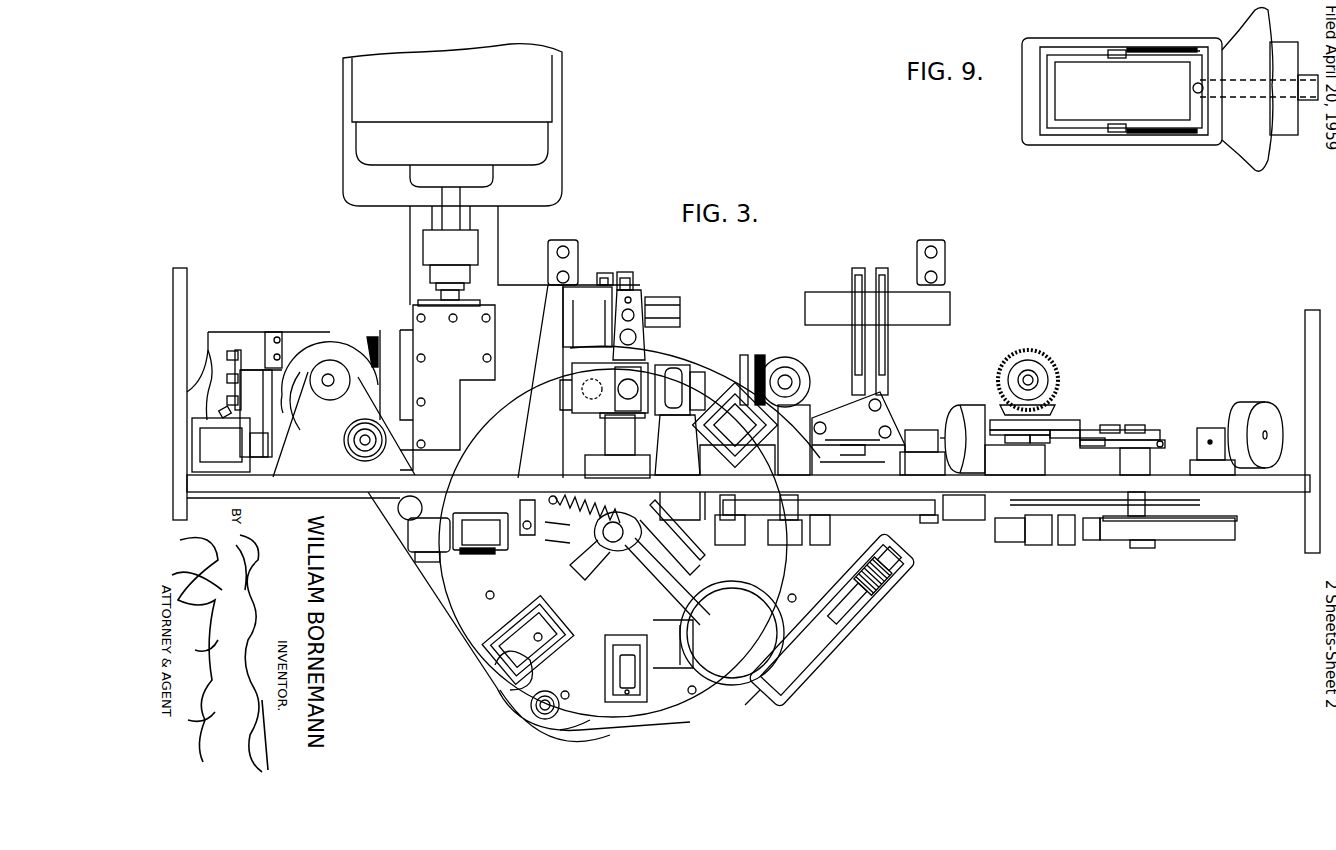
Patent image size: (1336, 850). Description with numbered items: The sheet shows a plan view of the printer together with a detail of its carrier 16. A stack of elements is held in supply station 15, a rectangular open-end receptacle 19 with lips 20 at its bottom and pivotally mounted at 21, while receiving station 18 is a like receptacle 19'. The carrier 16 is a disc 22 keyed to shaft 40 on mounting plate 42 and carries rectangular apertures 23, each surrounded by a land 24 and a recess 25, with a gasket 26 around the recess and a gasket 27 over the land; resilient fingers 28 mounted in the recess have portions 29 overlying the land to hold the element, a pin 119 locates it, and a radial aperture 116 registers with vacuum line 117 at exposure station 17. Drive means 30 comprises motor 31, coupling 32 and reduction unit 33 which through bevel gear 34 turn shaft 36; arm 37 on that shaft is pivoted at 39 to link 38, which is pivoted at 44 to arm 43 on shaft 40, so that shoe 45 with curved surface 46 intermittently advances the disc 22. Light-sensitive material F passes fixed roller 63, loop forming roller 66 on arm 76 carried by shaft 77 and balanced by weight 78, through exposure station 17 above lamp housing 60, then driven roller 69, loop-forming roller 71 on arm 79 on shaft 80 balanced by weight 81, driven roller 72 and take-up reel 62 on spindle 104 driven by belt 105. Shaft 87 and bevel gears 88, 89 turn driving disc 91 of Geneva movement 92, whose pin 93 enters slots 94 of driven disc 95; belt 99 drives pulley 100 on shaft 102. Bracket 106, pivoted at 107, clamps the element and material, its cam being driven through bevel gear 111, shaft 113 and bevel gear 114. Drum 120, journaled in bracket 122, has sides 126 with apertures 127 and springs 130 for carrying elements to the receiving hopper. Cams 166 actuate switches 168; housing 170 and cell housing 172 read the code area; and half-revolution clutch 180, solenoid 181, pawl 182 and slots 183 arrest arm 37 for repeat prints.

In FIG. 3, the supply station 15 is at (490, 560).
In FIG. 3, the carrier 16 is at (684, 722).
In FIG. 3, the exposure station 17 is at (811, 534).
In FIG. 3, the receiving station 18 is at (658, 365).
In FIG. 3, the receptacle 19 is at (412, 537).
In FIG. 3, the receptacle 19' is at (607, 434).
In FIG. 3, the lips 20 is at (612, 365).
In FIG. 3, the pivot 21 is at (692, 370).
In FIG. 9, the disc 22 is at (1255, 165).
In FIG. 3, the disc 22 is at (534, 638).
In FIG. 9, the apertures 23 is at (1082, 122).
In FIG. 3, the apertures 23 is at (542, 637).
In FIG. 9, the land 24 is at (1050, 135).
In FIG. 3, the land 24 is at (498, 650).
In FIG. 9, the recess 25 is at (1020, 132).
In FIG. 3, the recess 25 is at (525, 612).
In FIG. 9, the gasket 26 is at (1172, 40).
In FIG. 3, the gasket 26 is at (560, 630).
In FIG. 9, the gasket 27 is at (1060, 55).
In FIG. 3, the gasket 27 is at (508, 630).
In FIG. 9, the resilient fingers 28 is at (1185, 48).
In FIG. 9, the portions 29 is at (1117, 50).
In FIG. 3, the drive means 30 is at (404, 219).
In FIG. 3, the motor 31 is at (540, 103).
In FIG. 3, the coupling 32 is at (470, 245).
In FIG. 3, the reduction unit 33 is at (447, 387).
In FIG. 3, the bevel gear 34 is at (375, 337).
In FIG. 3, the shaft 36 is at (326, 386).
In FIG. 3, the arm 37 is at (337, 426).
In FIG. 3, the link 38 is at (392, 508).
In FIG. 3, the pivot 39 is at (355, 447).
In FIG. 3, the shaft 40 is at (612, 550).
In FIG. 3, the mounting plate 42 is at (318, 486).
In FIG. 3, the arm 43 is at (594, 727).
In FIG. 3, the pivot 44 is at (510, 680).
In FIG. 3, the shoe 45 is at (558, 720).
In FIG. 3, the curved surface 46 is at (625, 718).
In FIG. 3, the lamp housing 60 is at (815, 540).
In FIG. 3, the take-up reel 62 is at (1235, 540).
In FIG. 3, the fixed roller 63 is at (672, 540).
In FIG. 3, the loop forming roller 66 is at (735, 545).
In FIG. 3, the driven roller 69 is at (1012, 543).
In FIG. 3, the loop-forming roller 71 is at (1045, 548).
In FIG. 3, the driven roller 72 is at (1088, 542).
In FIG. 3, the arm 76 is at (890, 512).
In FIG. 3, the shaft 77 is at (935, 522).
In FIG. 3, the weight 78 is at (967, 410).
In FIG. 3, the arm 79 is at (1165, 505).
In FIG. 3, the shaft 80 is at (1210, 425).
In FIG. 3, the weight 81 is at (1247, 404).
In FIG. 3, the shaft 87 is at (1035, 375).
In FIG. 3, the bevel gear 88 is at (1022, 354).
In FIG. 3, the bevel gear 89 is at (1052, 410).
In FIG. 3, the driving disc 91 is at (1065, 420).
In FIG. 3, the Geneva movement 92 is at (1095, 425).
In FIG. 3, the driving pin 93 is at (1020, 442).
In FIG. 3, the slots 94 is at (1036, 443).
In FIG. 3, the driven disc 95 is at (992, 428).
In FIG. 3, the belt 99 is at (745, 450).
In FIG. 3, the pulley 100 is at (1090, 430).
In FIG. 3, the shaft 102 is at (1115, 425).
In FIG. 3, the spindle 104 is at (1135, 550).
In FIG. 3, the belt 105 is at (1162, 440).
In FIG. 3, the bracket 106 is at (950, 520).
In FIG. 3, the pivot 107 is at (960, 522).
In FIG. 3, the bevel gear 111 is at (758, 355).
In FIG. 3, the shaft 113 is at (785, 375).
In FIG. 3, the bevel gear 114 is at (800, 360).
In FIG. 9, the radial aperture 116 is at (1250, 100).
In FIG. 9, the vacuum line 117 is at (1312, 102).
In FIG. 9, the pin 119 is at (1205, 85).
In FIG. 3, the drum 120 is at (693, 383).
In FIG. 3, the bracket 122 is at (590, 468).
In FIG. 3, the sides 126 is at (575, 375).
In FIG. 3, the aperture 127 is at (672, 400).
In FIG. 3, the springs 130 is at (677, 445).
In FIG. 3, the switch actuating cams 166 is at (742, 355).
In FIG. 3, the switches 168 is at (882, 270).
In FIG. 3, the housing 170 is at (765, 612).
In FIG. 3, the housing 172 is at (756, 702).
In FIG. 3, the half-revolution clutch 180 is at (295, 335).
In FIG. 3, the solenoid 181 is at (215, 440).
In FIG. 3, the pawl 182 is at (270, 378).
In FIG. 3, the slots 183 is at (330, 340).
In FIG. 3, the light-sensitive material F is at (1112, 541).